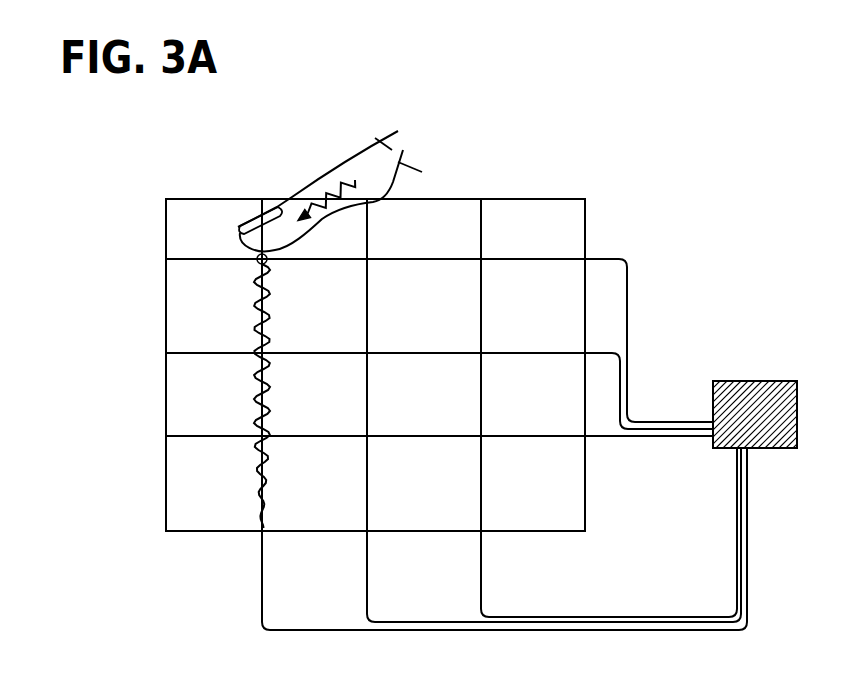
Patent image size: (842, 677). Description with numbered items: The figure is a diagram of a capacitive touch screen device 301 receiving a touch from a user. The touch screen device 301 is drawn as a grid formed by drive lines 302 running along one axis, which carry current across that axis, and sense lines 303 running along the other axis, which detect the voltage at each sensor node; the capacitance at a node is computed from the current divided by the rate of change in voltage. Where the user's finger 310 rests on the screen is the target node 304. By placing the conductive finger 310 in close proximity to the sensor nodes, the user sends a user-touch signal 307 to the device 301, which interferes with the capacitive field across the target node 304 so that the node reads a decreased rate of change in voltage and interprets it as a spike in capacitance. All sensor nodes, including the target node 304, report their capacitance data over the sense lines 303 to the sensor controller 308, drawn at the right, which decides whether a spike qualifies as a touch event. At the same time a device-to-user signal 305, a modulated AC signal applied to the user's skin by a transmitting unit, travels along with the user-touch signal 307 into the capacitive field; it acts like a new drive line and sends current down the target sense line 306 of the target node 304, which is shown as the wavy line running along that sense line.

The capacitive touch screen device 301 is at (636, 180).
The drive lines 302 is at (169, 245).
The sense lines 303 is at (278, 529).
The target node 304 is at (258, 263).
The device-to-user signal 305 is at (439, 175).
The target sense line 306 is at (257, 455).
The user-touch signal 307 is at (378, 125).
The sensor controller 308 is at (742, 380).
The user's finger 310 is at (240, 223).